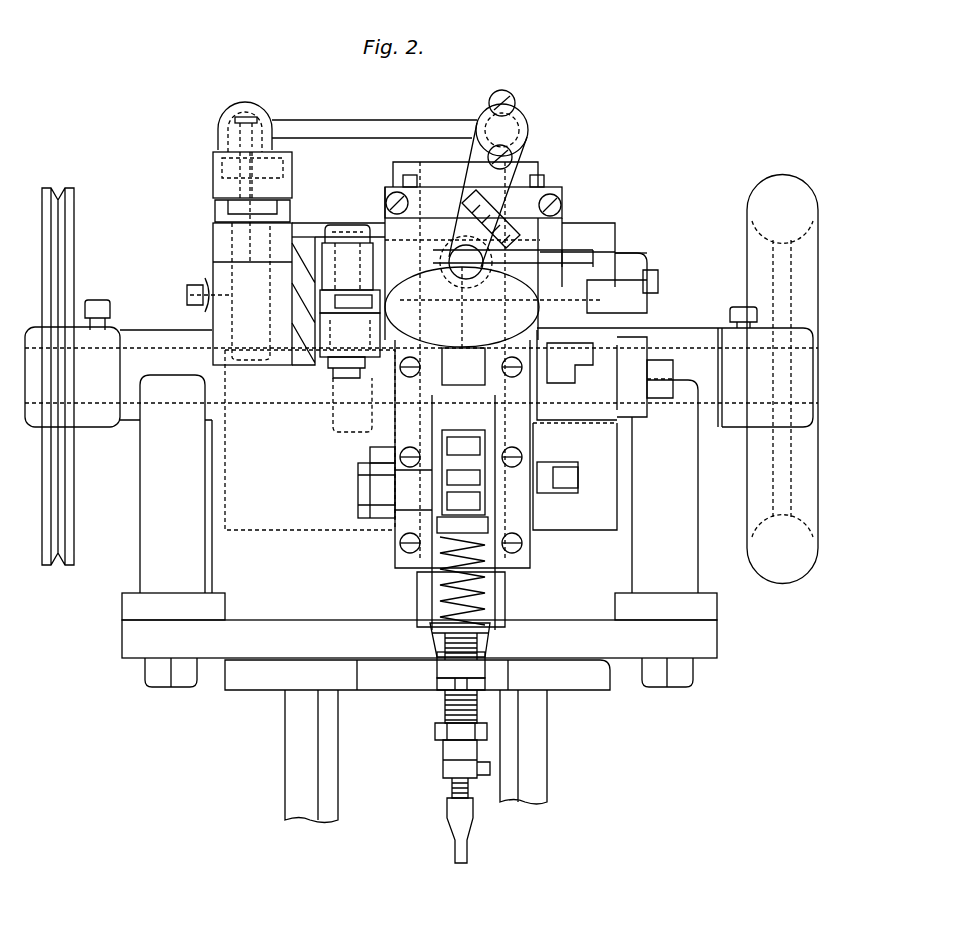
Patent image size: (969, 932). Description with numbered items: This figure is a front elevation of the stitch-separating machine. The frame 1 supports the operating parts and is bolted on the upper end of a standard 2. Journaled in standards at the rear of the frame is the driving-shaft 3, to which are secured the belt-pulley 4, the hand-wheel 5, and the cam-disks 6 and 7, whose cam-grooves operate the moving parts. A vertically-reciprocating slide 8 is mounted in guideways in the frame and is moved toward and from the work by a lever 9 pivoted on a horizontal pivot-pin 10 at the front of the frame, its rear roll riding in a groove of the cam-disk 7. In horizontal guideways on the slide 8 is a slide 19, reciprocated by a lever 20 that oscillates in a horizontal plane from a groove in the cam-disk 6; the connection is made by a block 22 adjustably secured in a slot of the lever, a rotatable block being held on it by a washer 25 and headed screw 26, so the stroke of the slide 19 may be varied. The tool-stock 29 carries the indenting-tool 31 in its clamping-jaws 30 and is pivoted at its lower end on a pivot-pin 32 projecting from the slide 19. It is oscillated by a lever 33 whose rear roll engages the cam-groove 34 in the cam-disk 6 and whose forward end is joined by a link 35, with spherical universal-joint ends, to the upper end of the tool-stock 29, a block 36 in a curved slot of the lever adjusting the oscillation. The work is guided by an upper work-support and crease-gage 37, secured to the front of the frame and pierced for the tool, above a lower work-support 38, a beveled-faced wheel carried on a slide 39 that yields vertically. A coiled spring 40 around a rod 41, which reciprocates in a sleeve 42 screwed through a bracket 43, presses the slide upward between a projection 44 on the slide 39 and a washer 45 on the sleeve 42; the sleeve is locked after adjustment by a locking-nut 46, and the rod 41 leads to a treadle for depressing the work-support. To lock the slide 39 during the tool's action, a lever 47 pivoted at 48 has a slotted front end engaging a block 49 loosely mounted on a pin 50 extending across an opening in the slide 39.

The frame 1 is at (419, 531).
The standard 2 is at (578, 690).
The driving-shaft 3 is at (145, 350).
The belt-pulley 4 is at (84, 508).
The hand-wheel 5 is at (747, 254).
The cam-disk 6 is at (300, 226).
The cam-disk 7 is at (613, 223).
The vertically-reciprocating slide 8 is at (442, 185).
The lever 9 is at (648, 330).
The pivot-pin 10 is at (672, 372).
The slide 19 is at (383, 250).
The lever 20 is at (318, 378).
The block 22 is at (350, 300).
The washer 25 is at (320, 248).
The headed screw 26 is at (350, 234).
The tool-stock 29 is at (512, 168).
The clamping-jaws 30 is at (510, 225).
The indenting-tool 31 is at (440, 262).
The pivot-pin 32 is at (485, 285).
The lever 33 is at (292, 176).
The cam-groove 34 is at (304, 301).
The link 35 is at (368, 113).
The block 36 is at (232, 133).
The upper work-support and crease-gage 37 is at (548, 245).
The lower work-support 38 is at (430, 307).
The slide 39 is at (462, 485).
The coiled spring 40 is at (480, 590).
The rod 41 is at (452, 790).
The sleeve 42 is at (445, 700).
The bracket 43 is at (487, 660).
The projection 44 is at (490, 525).
The washer 45 is at (490, 627).
The locking-nut 46 is at (437, 688).
The lever 47 is at (450, 447).
The pivot 48 is at (570, 470).
The block 49 is at (400, 490).
The pin 50 is at (500, 472).